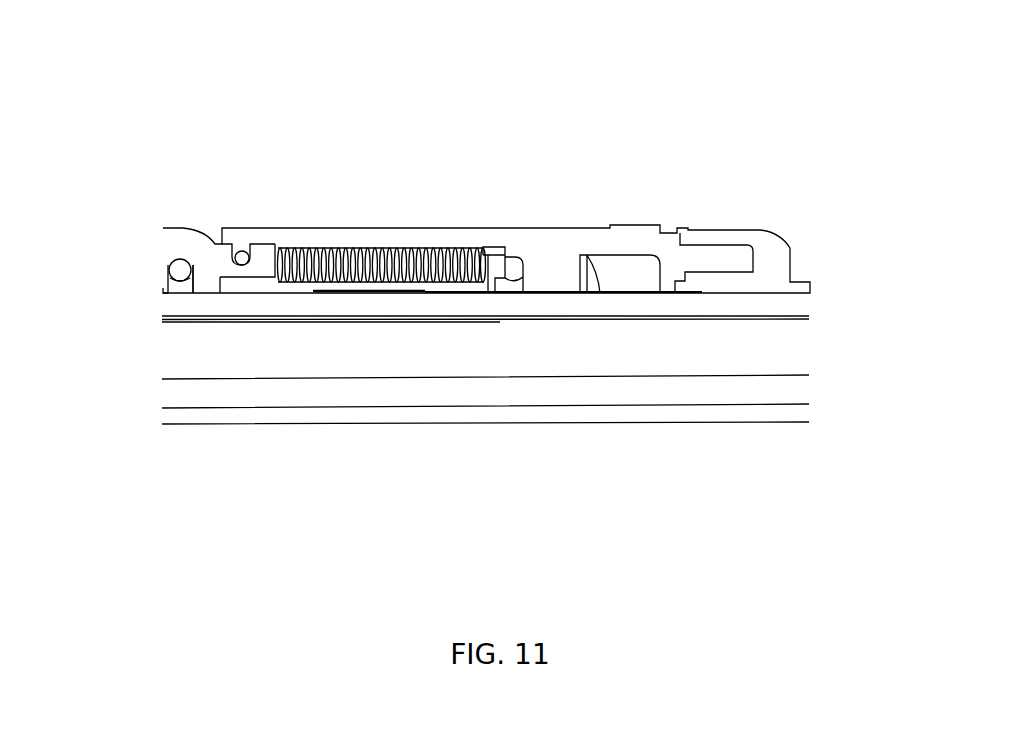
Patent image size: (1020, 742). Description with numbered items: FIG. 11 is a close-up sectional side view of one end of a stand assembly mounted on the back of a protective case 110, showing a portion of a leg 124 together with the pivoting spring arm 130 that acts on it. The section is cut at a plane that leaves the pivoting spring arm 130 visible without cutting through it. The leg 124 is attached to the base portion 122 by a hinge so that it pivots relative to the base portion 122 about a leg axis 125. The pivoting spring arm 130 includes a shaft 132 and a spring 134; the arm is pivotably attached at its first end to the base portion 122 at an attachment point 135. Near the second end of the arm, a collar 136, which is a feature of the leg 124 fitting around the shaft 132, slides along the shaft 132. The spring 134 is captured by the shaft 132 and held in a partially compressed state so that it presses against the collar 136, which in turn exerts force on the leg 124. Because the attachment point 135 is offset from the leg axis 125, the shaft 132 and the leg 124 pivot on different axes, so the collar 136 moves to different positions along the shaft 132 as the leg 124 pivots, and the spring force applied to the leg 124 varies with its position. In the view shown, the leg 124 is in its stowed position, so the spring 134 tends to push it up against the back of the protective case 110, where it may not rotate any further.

The protective case 110 is at (530, 417).
The base portion 122 is at (183, 243).
The leg 124 is at (635, 246).
The leg axis 125 is at (178, 264).
The pivoting spring arm 130 is at (388, 258).
The shaft 132 is at (512, 261).
The spring 134 is at (313, 258).
The attachment point 135 is at (243, 254).
The collar 136 is at (494, 252).